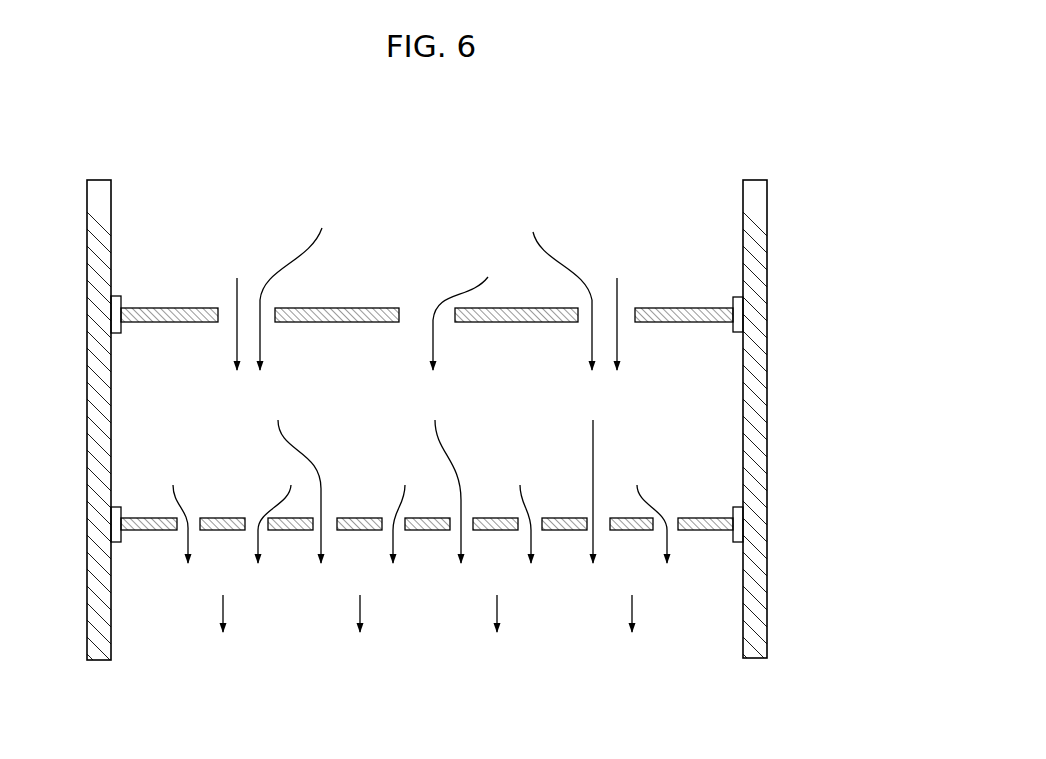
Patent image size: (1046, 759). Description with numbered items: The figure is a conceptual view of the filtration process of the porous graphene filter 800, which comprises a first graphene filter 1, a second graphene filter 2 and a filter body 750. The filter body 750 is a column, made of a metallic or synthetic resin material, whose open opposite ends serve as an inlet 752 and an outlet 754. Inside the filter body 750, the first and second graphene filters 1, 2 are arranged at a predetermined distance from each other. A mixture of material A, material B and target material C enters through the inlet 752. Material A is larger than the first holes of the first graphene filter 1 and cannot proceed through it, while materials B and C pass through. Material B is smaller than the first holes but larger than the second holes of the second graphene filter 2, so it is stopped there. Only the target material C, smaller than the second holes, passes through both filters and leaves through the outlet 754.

The filter body 750 is at (757, 193).
The first graphene filter 1 is at (705, 308).
The second graphene filter 2 is at (432, 532).
The inlet 752 is at (442, 214).
The outlet 754 is at (574, 607).
The porous graphene filter 800 is at (601, 198).